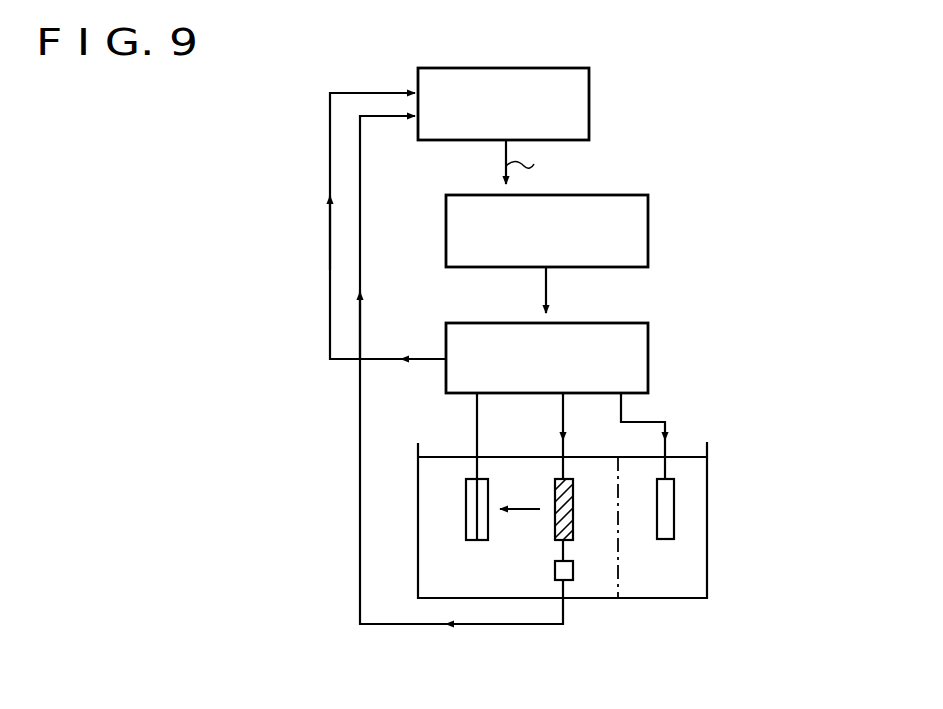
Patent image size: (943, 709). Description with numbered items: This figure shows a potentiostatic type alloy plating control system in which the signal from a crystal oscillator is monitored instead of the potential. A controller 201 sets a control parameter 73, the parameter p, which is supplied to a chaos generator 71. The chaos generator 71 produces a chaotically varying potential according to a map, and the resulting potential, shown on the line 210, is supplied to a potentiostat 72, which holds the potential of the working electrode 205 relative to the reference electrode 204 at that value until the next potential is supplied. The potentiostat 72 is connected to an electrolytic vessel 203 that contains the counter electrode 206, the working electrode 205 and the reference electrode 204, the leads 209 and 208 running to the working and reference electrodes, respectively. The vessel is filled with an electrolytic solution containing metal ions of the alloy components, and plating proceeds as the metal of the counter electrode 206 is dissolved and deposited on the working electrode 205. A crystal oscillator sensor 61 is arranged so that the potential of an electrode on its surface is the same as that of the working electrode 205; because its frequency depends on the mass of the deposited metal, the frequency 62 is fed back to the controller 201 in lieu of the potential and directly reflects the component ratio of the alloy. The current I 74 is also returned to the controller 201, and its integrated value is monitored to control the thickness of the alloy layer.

The controller 201 is at (589, 72).
The control parameter 73 is at (506, 166).
The chaos generator 71 is at (648, 205).
The potential signal E line 210 is at (546, 290).
The potentiostat 72 is at (648, 333).
The integrated value of the current 74 is at (330, 362).
The frequency 62 is at (360, 626).
The electrolytic vessel 203 is at (707, 484).
The counter electrode 206 is at (470, 479).
The working electrode lead 209 is at (562, 423).
The working electrode 205 is at (563, 479).
The reference electrode lead 208 is at (658, 414).
The reference electrode 204 is at (674, 527).
The crystal oscillator sensor 61 is at (573, 573).